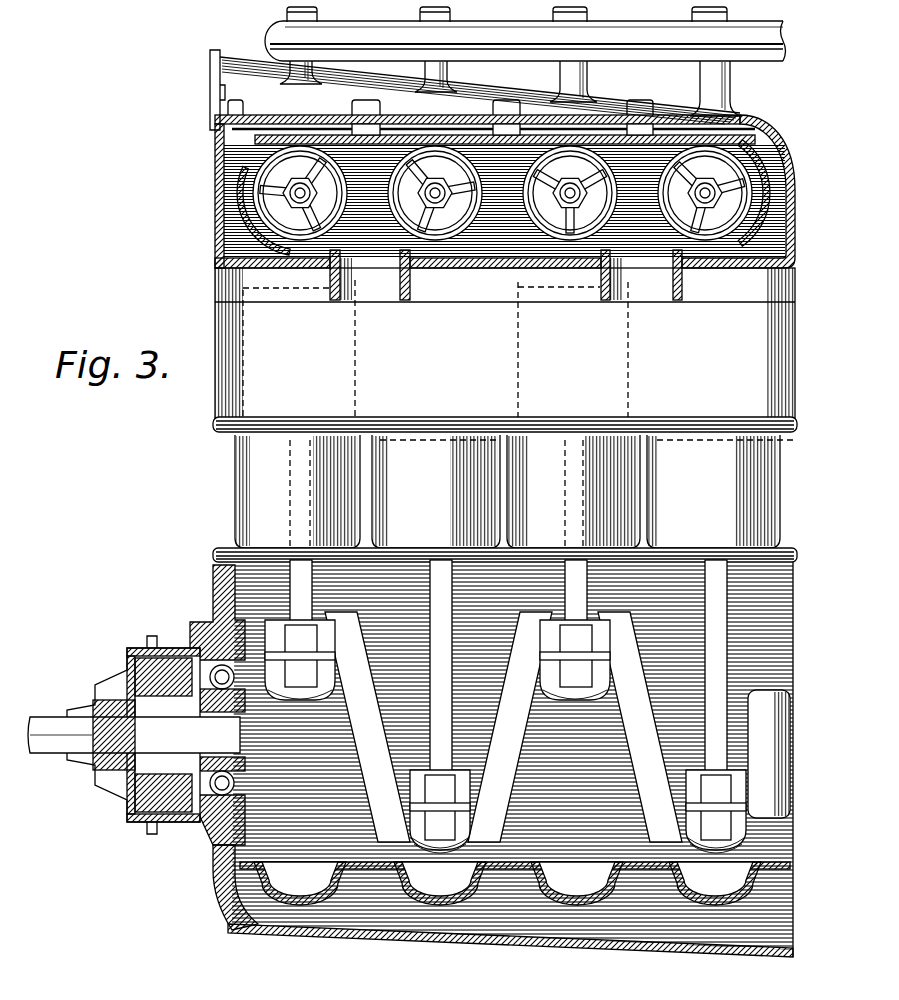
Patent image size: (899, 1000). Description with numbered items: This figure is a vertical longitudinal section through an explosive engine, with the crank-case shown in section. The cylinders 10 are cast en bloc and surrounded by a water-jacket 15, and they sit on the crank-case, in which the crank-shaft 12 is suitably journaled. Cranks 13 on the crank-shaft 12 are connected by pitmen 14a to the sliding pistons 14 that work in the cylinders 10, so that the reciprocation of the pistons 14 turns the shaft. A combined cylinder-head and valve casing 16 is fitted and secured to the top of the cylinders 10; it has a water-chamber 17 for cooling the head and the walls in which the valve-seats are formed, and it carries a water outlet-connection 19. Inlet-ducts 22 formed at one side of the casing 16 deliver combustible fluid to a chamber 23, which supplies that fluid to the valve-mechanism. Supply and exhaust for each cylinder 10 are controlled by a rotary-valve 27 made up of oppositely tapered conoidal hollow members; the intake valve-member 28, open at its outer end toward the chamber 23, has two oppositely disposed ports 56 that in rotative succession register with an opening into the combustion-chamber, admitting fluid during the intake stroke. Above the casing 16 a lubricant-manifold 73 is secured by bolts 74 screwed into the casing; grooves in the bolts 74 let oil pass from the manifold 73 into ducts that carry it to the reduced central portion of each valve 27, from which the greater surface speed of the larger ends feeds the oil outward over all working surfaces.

The cylinders 10 is at (505, 498).
The crank-shaft 12 is at (136, 735).
The cranks 13 is at (535, 706).
The sliding pistons 14 is at (404, 418).
The pitmen 14a is at (490, 690).
The water-jacket 15 is at (505, 350).
The combined cylinder-head and valve casing 16 is at (213, 236).
The water-chamber 17 is at (216, 206).
The outlet-connection 19 is at (209, 101).
The inlet-ducts 22 is at (340, 287).
The chamber 23 is at (504, 199).
The rotary-valve 27 is at (340, 230).
The intake valve-member 28 is at (492, 186).
The ports 56 is at (338, 183).
The lubricant-manifold 73 is at (525, 68).
The bolts 74 is at (422, 12).